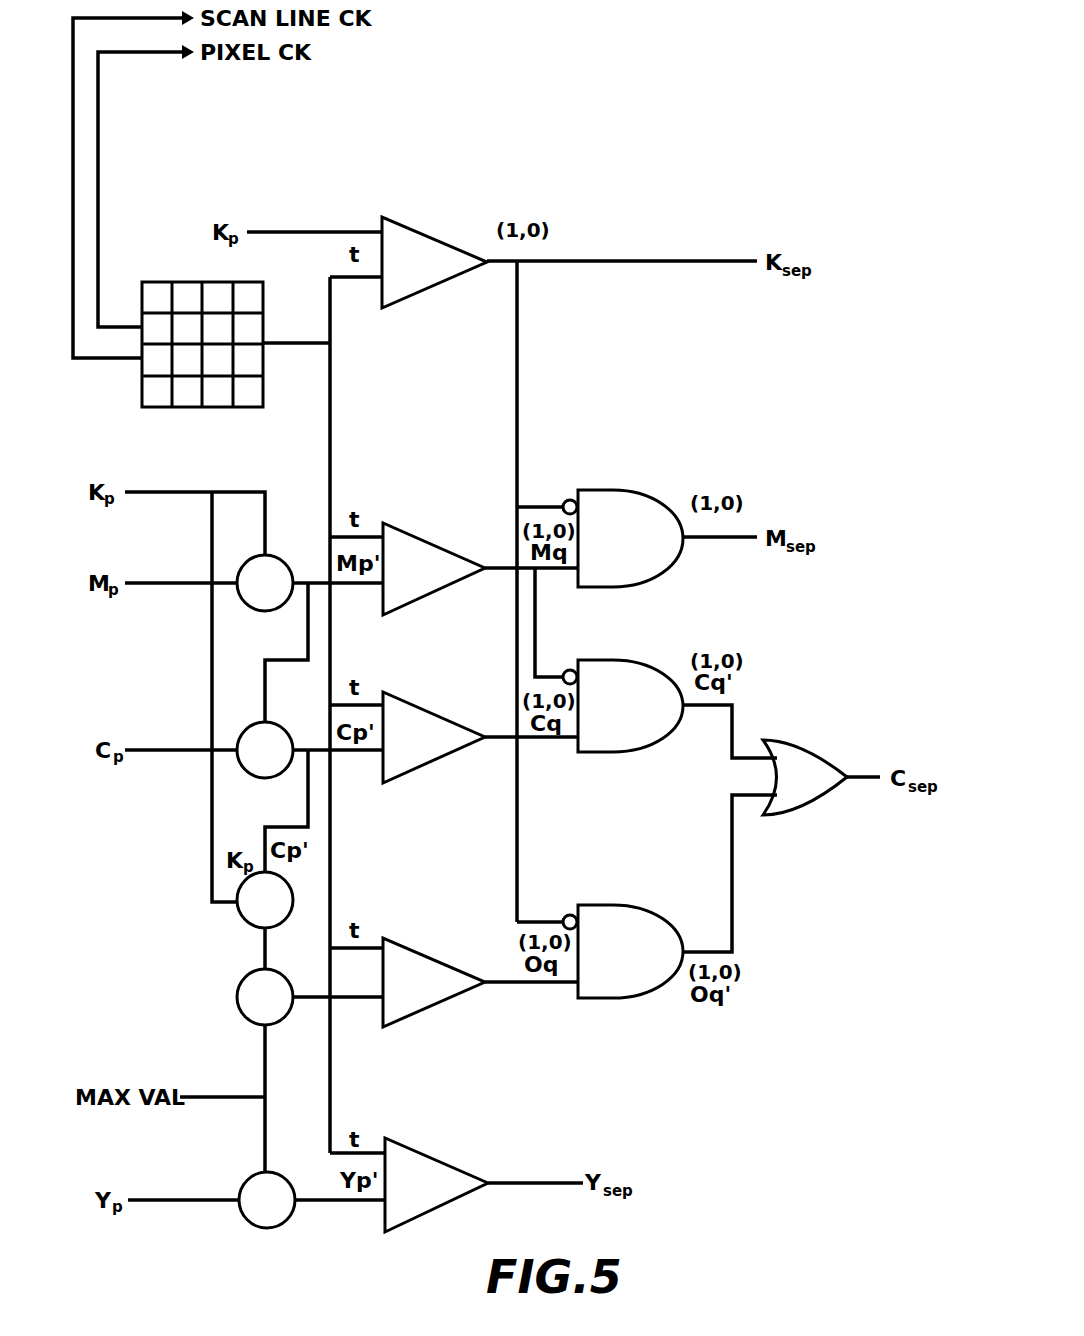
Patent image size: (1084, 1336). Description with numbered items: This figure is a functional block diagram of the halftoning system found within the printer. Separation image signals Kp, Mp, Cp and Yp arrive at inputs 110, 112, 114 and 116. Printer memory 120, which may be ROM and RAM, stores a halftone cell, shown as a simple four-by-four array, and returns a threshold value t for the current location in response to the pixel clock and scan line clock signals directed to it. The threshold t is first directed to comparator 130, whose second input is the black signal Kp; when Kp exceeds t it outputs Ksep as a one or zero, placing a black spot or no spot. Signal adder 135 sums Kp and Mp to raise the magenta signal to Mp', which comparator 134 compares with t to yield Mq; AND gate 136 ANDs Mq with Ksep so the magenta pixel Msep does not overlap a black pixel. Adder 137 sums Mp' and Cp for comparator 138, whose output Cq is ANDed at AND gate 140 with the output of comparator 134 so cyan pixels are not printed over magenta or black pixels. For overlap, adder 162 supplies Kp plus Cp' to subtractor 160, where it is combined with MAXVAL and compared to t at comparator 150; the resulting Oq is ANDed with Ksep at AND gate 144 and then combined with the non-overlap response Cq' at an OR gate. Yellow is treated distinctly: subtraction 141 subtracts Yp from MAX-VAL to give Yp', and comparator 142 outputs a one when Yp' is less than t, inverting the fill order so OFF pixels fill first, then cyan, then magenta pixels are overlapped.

The input 110 is at (304, 232).
The input 112 is at (165, 583).
The input 114 is at (165, 750).
The input 116 is at (165, 1200).
The printer memory 120 is at (155, 282).
The comparator 130 is at (440, 237).
The comparator 134 is at (440, 540).
The signal adder 135 is at (265, 611).
The AND gate 136 is at (640, 492).
The adder 137 is at (265, 778).
The comparator 138 is at (440, 710).
The AND gate 140 is at (640, 659).
The subtraction 141 is at (262, 1228).
The comparator 142 is at (440, 1160).
The AND gate 144 is at (640, 907).
The comparator 150 is at (440, 955).
The subtractor 160 is at (260, 1020).
The adder 162 is at (260, 922).